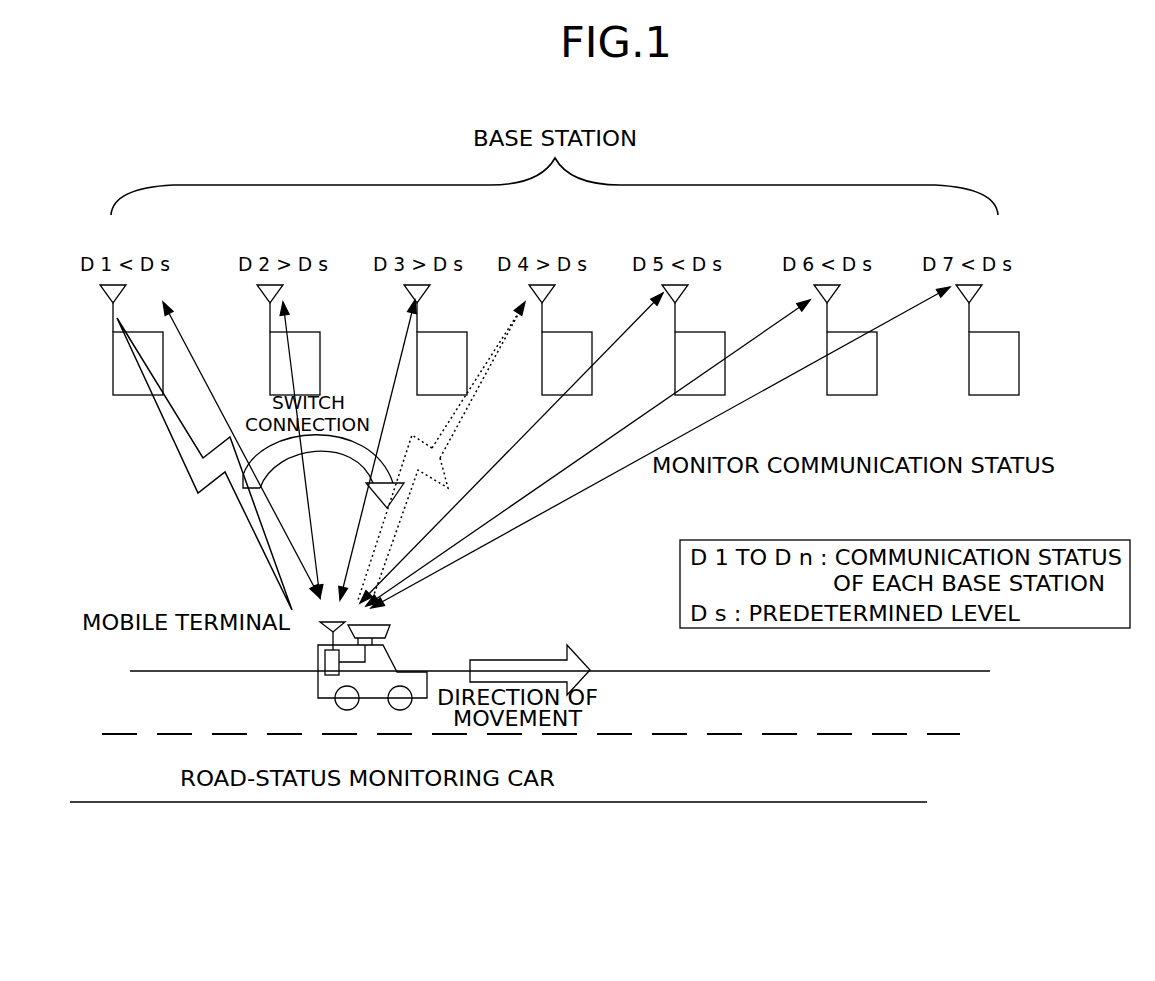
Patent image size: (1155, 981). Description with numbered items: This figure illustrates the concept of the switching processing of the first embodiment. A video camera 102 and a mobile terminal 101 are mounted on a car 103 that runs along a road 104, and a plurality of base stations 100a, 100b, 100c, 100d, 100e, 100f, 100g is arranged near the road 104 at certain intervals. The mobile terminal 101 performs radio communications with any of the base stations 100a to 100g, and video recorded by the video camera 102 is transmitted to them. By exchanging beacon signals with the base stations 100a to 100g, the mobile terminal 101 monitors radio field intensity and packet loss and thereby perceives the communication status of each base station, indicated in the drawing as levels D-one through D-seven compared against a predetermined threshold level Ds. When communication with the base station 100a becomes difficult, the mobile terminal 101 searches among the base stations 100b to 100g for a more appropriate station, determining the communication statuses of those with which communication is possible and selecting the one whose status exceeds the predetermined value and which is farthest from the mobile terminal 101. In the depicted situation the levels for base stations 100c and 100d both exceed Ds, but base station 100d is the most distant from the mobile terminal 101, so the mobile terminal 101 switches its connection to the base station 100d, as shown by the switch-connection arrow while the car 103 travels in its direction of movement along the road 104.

The base station 100a is at (148, 333).
The base station 100b is at (300, 333).
The base station 100c is at (433, 333).
The base station 100d is at (557, 333).
The base station 100e is at (690, 333).
The base station 100f is at (843, 333).
The base station 100g is at (984, 333).
The mobile terminal 101 is at (325, 661).
The video camera 102 is at (382, 630).
The car 103 is at (372, 697).
The road 104 is at (853, 788).